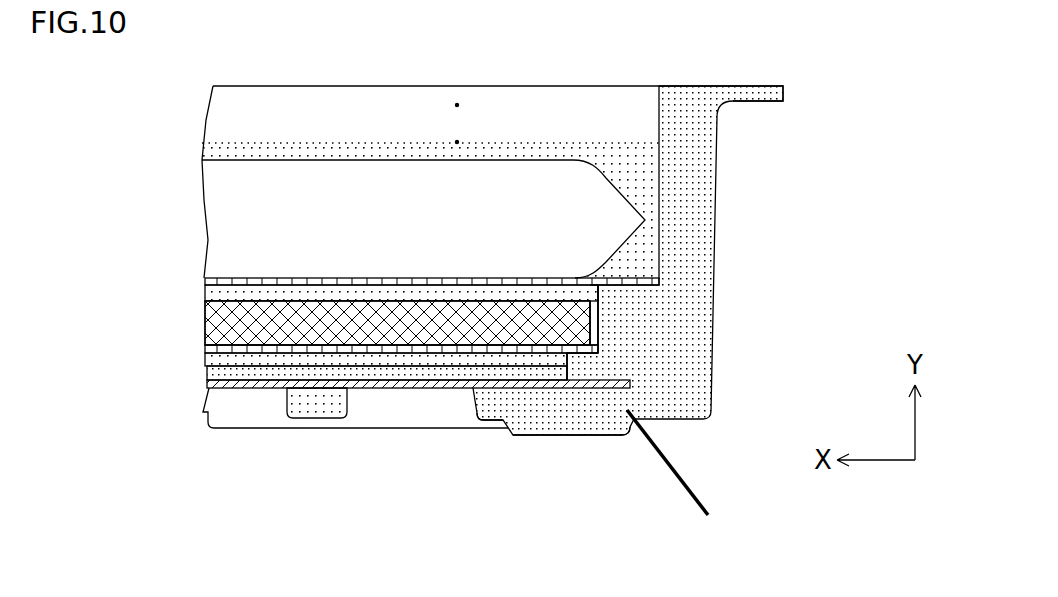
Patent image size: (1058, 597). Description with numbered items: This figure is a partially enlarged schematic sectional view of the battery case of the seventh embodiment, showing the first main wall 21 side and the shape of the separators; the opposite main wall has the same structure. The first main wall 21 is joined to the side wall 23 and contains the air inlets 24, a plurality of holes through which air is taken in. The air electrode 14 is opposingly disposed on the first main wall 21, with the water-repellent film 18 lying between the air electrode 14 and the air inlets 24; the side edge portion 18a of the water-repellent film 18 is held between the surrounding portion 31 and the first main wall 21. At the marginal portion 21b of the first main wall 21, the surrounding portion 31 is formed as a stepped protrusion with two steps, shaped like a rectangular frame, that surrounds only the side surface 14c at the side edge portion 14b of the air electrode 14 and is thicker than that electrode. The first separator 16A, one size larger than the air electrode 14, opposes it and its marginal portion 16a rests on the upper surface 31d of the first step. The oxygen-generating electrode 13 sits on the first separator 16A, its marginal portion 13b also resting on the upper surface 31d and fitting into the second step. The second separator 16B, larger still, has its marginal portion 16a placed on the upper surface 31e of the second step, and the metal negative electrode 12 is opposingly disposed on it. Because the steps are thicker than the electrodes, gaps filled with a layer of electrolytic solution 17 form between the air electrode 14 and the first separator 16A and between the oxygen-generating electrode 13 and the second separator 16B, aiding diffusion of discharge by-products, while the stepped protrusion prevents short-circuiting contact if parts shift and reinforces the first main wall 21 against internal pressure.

The metal negative electrode 12 is at (228, 192).
The oxygen-generating electrode 13 is at (215, 320).
The marginal portion of the oxygen-generating electrode 13b is at (618, 322).
The air electrode 14 is at (223, 390).
The side edge portion of the air electrode 14b is at (537, 388).
The side surface of the air electrode 14c is at (585, 388).
The first separator 16A is at (220, 349).
The second separator 16B is at (225, 282).
The marginal portion of the separator 16a is at (632, 298).
The electrolytic solution 17 is at (233, 147).
The water-repellent film 18 is at (365, 386).
The side edge portion of the water-repellent film 18a is at (633, 387).
The first main wall 21 is at (547, 423).
The marginal portion of the first main wall 21b is at (685, 479).
The side wall 23 is at (716, 136).
The air inlets 24 is at (256, 412).
The surrounding portion (stepped protrusion) 31 is at (623, 345).
The upper surface of the first step of the stepped protrusion 31d is at (580, 357).
The upper surface of the second step of the stepped protrusion 31e is at (643, 307).